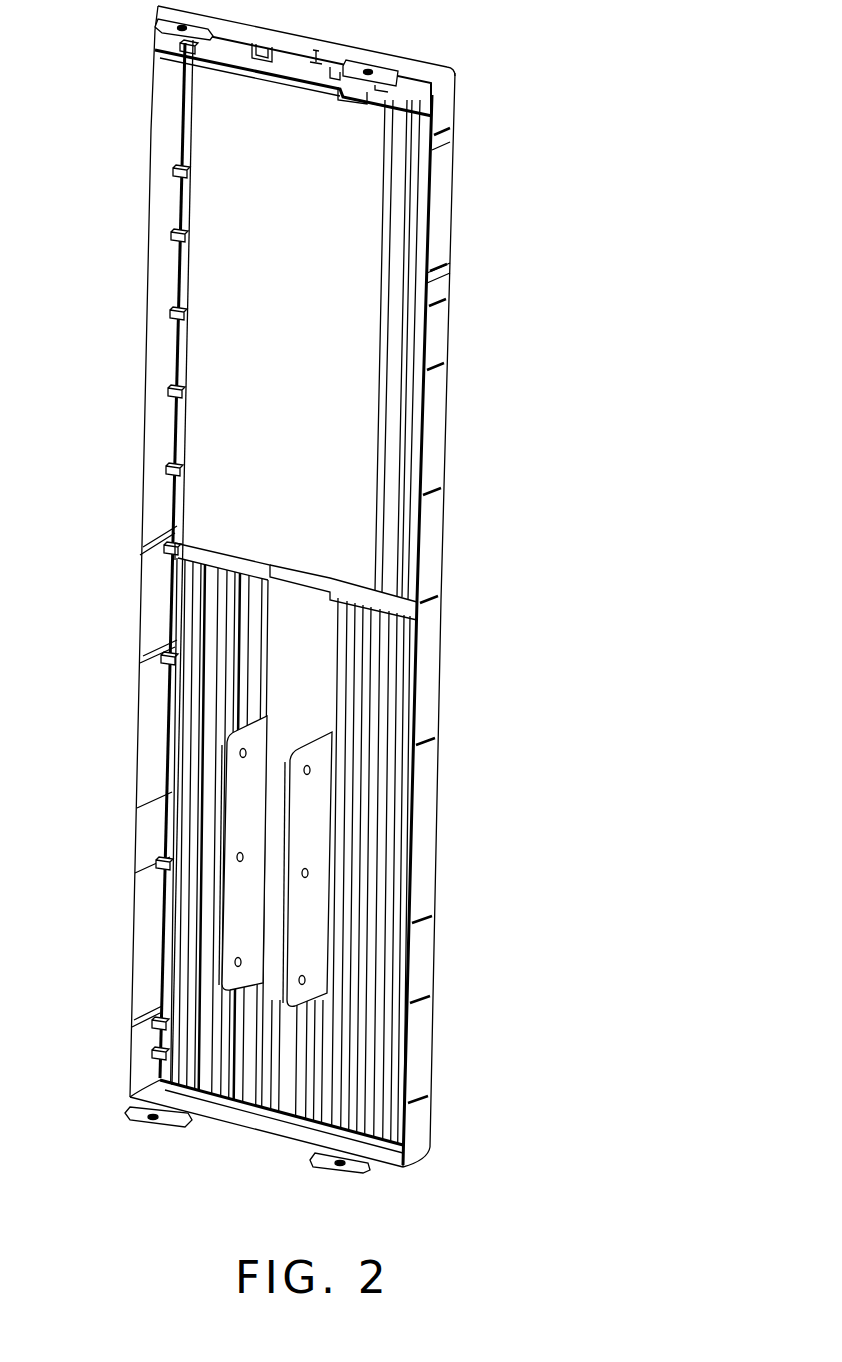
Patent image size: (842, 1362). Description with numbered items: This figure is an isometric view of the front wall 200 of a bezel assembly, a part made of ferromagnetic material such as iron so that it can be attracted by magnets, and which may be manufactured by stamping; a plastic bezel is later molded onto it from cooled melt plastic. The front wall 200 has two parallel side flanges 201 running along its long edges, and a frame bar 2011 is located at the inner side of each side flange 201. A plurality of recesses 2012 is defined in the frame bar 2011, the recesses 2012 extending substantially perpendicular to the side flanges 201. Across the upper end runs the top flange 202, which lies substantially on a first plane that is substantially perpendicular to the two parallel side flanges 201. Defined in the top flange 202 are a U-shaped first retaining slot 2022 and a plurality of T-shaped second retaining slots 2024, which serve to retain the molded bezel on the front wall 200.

The front wall 200 is at (557, 33).
The side flange 201 is at (437, 333).
The frame bar 2011 is at (192, 207).
The recess 2012 is at (187, 312).
The top flange 202 is at (377, 50).
The first retaining slot 2022 is at (258, 57).
The second retaining slot 2024 is at (316, 64).